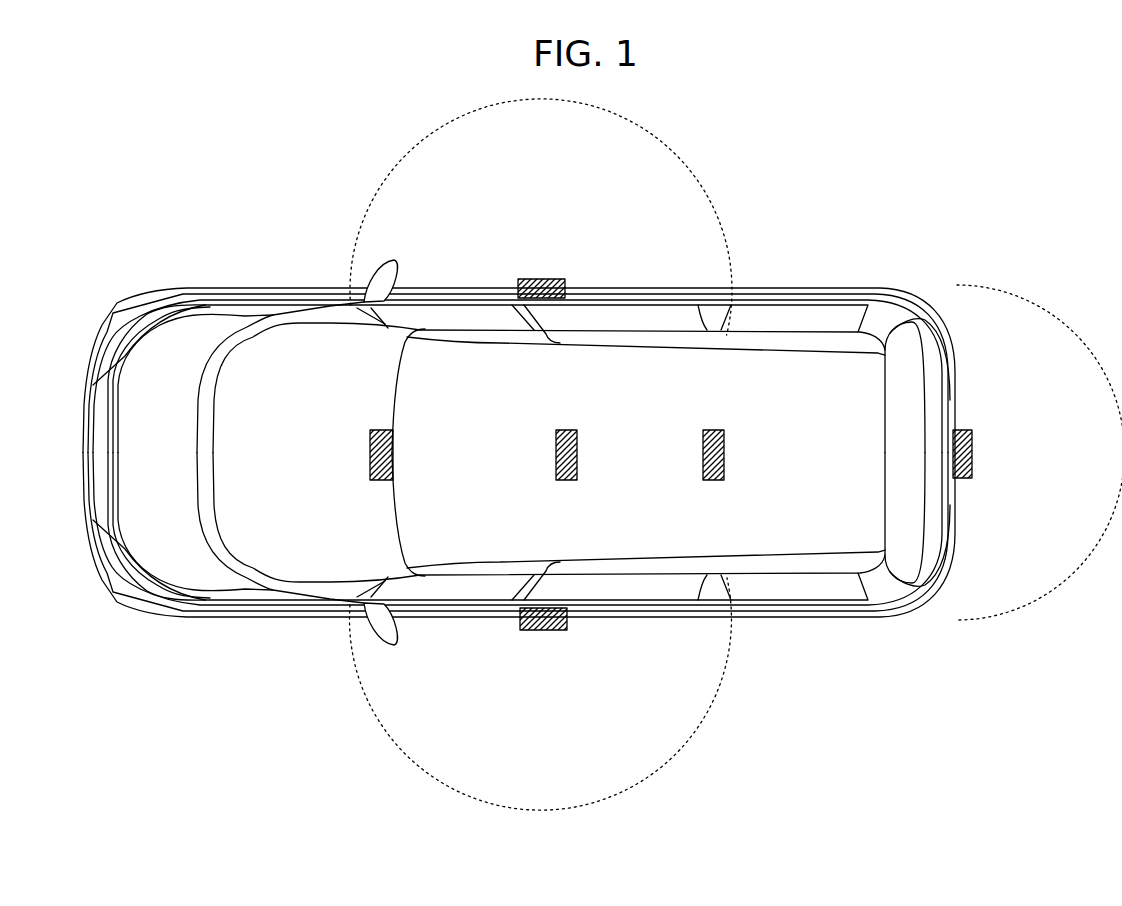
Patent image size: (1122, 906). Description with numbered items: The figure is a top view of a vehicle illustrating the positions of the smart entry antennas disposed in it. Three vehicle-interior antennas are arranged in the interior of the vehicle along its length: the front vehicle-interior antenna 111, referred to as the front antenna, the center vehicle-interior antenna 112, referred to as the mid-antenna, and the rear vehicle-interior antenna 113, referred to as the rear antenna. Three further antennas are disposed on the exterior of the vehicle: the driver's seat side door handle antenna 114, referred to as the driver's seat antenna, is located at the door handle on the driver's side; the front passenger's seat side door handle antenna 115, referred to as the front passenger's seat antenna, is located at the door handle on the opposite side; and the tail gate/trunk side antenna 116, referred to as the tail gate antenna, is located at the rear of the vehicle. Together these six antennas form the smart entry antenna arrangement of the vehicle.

The front vehicle-interior antenna 111 is at (370, 454).
The center vehicle-interior antenna 112 is at (556, 454).
The rear vehicle-interior antenna 113 is at (703, 454).
The driver's seat side door handle antenna 114 is at (546, 279).
The front passenger's seat side door handle antenna 115 is at (548, 631).
The tail gate/trunk side antenna 116 is at (974, 455).